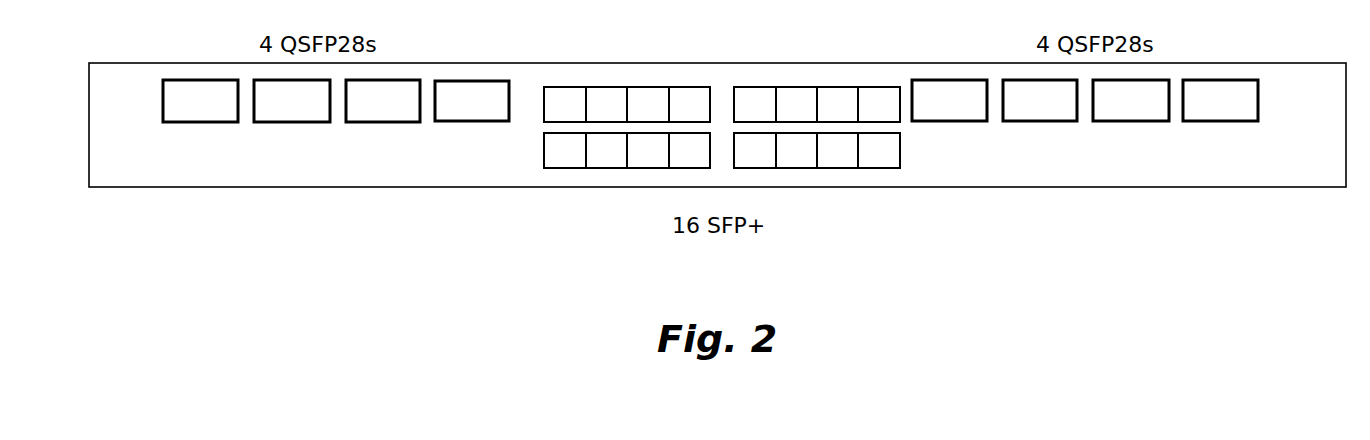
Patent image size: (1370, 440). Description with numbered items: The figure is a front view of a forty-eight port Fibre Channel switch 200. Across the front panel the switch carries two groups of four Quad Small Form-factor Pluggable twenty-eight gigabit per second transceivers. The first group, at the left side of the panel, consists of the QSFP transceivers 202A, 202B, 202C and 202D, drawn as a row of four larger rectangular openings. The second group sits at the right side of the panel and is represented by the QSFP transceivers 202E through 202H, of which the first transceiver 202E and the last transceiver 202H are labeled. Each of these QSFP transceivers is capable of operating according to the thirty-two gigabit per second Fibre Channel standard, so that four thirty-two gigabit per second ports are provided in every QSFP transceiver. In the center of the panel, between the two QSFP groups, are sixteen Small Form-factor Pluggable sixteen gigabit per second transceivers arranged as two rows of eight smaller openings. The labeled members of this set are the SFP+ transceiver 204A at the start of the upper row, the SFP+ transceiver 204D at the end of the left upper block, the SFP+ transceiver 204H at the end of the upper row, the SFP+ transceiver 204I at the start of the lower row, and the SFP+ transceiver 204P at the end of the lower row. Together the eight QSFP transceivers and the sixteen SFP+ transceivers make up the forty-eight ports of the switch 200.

The Fibre Channel switch 200 is at (1093, 188).
The QSFP 28 Gbps transceiver 202A is at (195, 125).
The QSFP 28 Gbps transceiver 202B is at (297, 123).
The QSFP 28 Gbps transceiver 202C is at (406, 123).
The QSFP 28 Gbps transceiver 202D is at (503, 123).
The QSFP 28 Gbps transceiver 202E is at (979, 122).
The QSFP 28 Gbps transceiver 202H is at (1197, 122).
The SFP+ 16 Gbps transceiver 204A is at (573, 85).
The SFP+ 16 Gbps transceiver 204D is at (701, 85).
The SFP+ 16 Gbps transceiver 204H is at (895, 85).
The SFP+ 16 Gbps transceiver 204I is at (567, 168).
The SFP+ 16 Gbps transceiver 204P is at (870, 168).